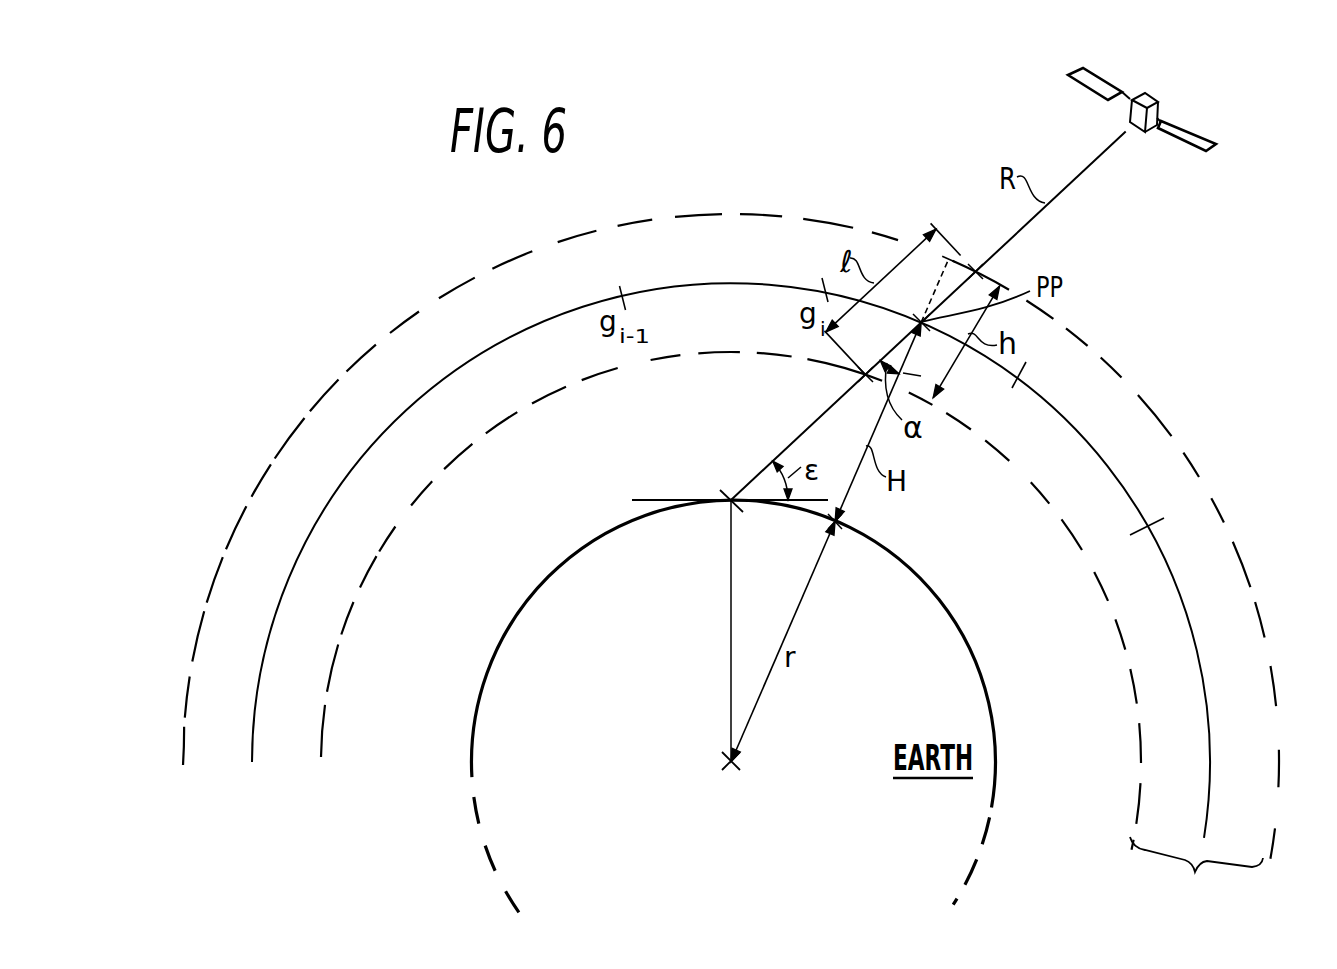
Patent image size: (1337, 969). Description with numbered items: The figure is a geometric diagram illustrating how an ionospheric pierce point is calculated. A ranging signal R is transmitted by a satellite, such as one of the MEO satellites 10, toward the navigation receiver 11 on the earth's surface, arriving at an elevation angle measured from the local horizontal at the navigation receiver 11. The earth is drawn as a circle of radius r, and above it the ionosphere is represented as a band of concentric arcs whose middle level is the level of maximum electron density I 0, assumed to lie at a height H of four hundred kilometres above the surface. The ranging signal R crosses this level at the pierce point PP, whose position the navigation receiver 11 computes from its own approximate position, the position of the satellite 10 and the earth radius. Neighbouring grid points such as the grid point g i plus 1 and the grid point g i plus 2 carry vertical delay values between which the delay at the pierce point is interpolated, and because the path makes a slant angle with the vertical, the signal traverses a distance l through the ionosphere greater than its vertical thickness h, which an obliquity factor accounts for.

The MEO satellite 10 is at (1152, 94).
The navigation receiver 11 is at (731, 496).
The ionosphere (I0 electron content) 0 is at (1205, 722).
The grid point g(i+1) 1 is at (1007, 389).
The grid point g(i+2) 2 is at (1136, 543).